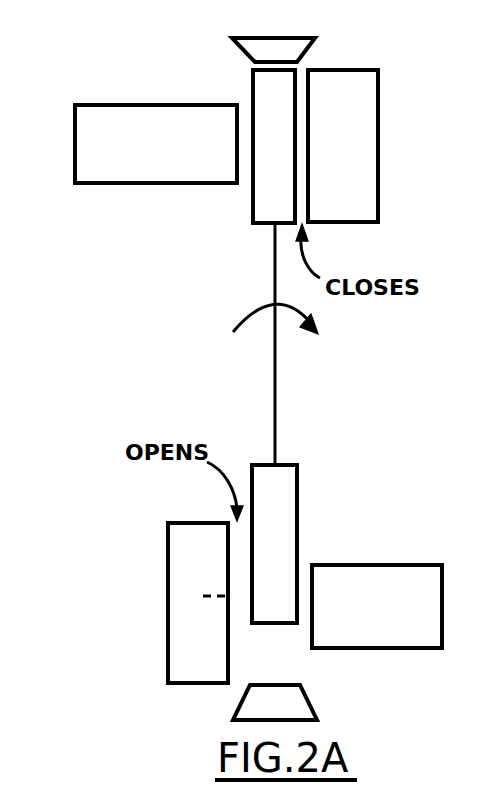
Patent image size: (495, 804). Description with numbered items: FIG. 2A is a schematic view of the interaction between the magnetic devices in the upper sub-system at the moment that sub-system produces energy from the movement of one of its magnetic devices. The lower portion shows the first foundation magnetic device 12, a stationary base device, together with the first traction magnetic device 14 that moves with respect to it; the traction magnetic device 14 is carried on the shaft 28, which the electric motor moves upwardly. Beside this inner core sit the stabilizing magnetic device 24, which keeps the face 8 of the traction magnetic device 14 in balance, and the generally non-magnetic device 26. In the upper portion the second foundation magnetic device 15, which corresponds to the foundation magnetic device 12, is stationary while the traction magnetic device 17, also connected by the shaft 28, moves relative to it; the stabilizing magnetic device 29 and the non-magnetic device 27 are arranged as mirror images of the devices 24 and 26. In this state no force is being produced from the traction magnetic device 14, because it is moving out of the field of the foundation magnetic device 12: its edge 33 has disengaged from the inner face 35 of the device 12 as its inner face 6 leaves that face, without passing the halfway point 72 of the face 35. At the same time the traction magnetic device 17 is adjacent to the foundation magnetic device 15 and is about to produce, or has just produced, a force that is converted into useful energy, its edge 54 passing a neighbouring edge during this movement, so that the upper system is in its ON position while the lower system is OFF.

The inner face 6 is at (250, 622).
The face 8 is at (298, 510).
The first foundation magnetic device 12 is at (198, 603).
The first traction magnetic device 14 is at (274, 544).
The second foundation magnetic device 15 is at (343, 146).
The traction magnetic device 17 is at (288, 142).
The stabilizing magnetic device 24 is at (377, 606).
The non-magnetic device 26 is at (275, 702).
The non-magnetic device 27 is at (247, 52).
The shaft 28 is at (275, 417).
The stabilizing magnetic device 29 is at (156, 144).
The edge 33 is at (243, 465).
The inner face 35 is at (228, 667).
The edge 54 is at (255, 188).
The halfway point 72 is at (215, 595).